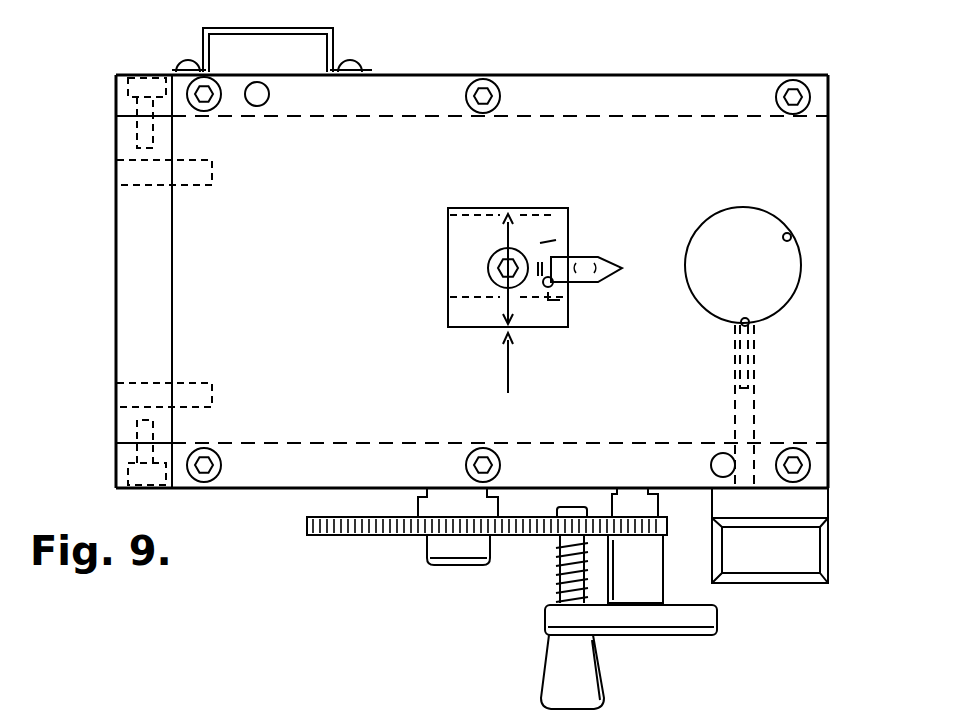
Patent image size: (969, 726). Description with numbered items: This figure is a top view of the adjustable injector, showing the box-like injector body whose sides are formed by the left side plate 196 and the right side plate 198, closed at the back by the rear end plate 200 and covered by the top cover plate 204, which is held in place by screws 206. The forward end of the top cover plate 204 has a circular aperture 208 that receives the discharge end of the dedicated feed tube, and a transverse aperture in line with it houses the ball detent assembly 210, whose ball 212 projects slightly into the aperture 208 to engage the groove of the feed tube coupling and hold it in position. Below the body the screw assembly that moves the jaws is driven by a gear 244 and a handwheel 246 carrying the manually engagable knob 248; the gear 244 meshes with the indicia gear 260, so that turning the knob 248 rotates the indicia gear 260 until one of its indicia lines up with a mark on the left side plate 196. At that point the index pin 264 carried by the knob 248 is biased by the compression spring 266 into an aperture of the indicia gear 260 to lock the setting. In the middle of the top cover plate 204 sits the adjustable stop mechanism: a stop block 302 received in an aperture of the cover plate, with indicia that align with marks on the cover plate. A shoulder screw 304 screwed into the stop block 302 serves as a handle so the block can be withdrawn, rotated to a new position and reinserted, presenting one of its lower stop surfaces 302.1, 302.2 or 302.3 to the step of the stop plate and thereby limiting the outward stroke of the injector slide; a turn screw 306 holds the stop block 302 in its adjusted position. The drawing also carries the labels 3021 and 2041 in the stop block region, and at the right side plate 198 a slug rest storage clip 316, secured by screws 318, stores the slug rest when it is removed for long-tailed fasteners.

The left side plate 196 is at (238, 465).
The right side plate 198 is at (405, 88).
The rear end plate 200 is at (116, 275).
The top cover plate 204 is at (810, 156).
The screws 206 is at (483, 78).
The circular aperture 208 is at (791, 237).
The ball detent assembly 210 is at (768, 360).
The ball 212 is at (763, 287).
The gear 244 is at (672, 522).
The handwheel 246 is at (718, 622).
The knob 248 is at (592, 660).
The indicia gear 260 is at (308, 518).
The index pin 264 is at (557, 578).
The compression spring 266 is at (558, 598).
The stop block 302 is at (451, 258).
The stop surface 302.1 is at (525, 208).
The stop surface 302.2 is at (563, 242).
The stop surface 302.3 is at (565, 303).
The dial marker 3021 is at (530, 251).
The shoulder screw 304 is at (488, 270).
The turn screw 306 is at (616, 267).
The dash number arrow 2041 is at (508, 352).
The slug rest storage clip 316 is at (285, 28).
The screws 318 is at (190, 60).